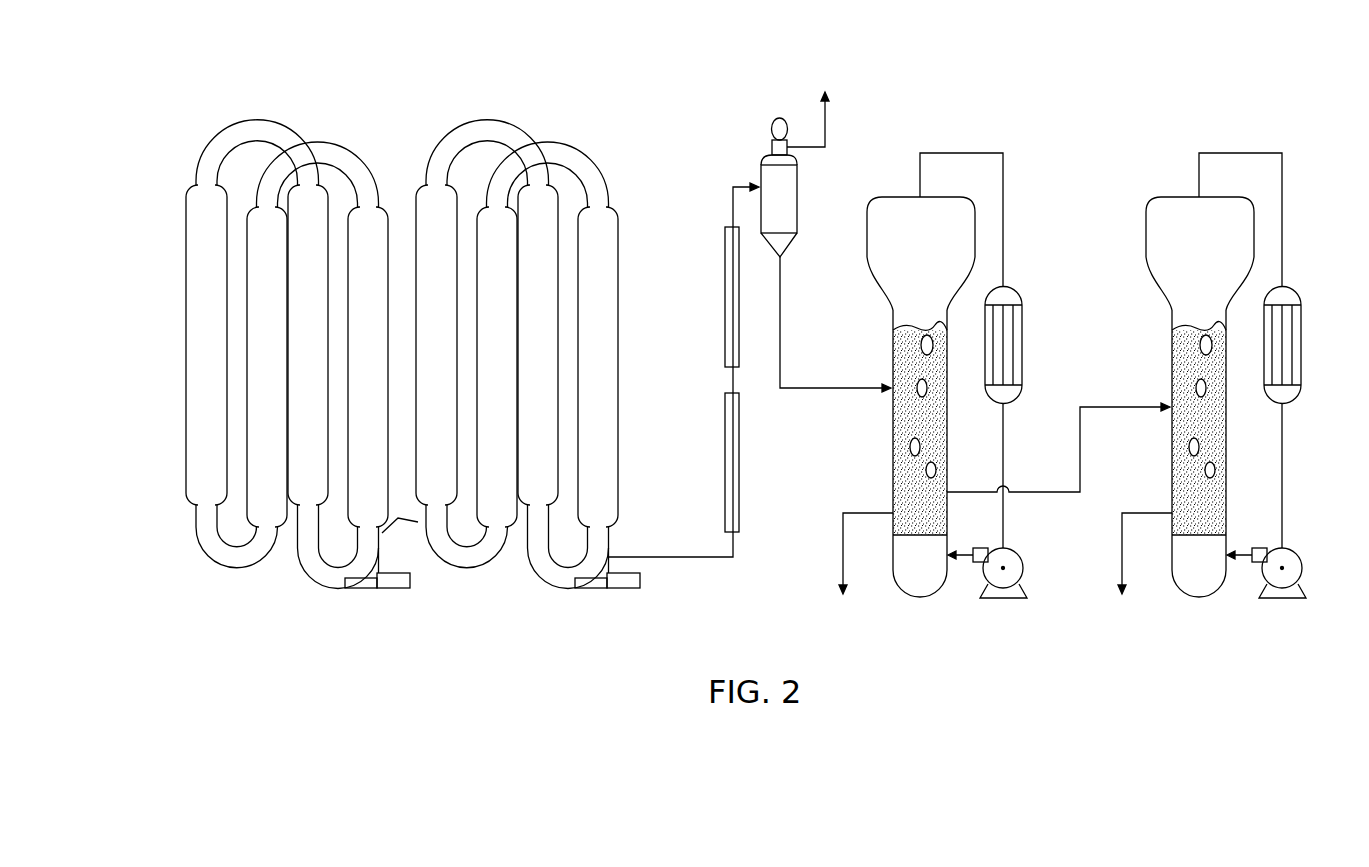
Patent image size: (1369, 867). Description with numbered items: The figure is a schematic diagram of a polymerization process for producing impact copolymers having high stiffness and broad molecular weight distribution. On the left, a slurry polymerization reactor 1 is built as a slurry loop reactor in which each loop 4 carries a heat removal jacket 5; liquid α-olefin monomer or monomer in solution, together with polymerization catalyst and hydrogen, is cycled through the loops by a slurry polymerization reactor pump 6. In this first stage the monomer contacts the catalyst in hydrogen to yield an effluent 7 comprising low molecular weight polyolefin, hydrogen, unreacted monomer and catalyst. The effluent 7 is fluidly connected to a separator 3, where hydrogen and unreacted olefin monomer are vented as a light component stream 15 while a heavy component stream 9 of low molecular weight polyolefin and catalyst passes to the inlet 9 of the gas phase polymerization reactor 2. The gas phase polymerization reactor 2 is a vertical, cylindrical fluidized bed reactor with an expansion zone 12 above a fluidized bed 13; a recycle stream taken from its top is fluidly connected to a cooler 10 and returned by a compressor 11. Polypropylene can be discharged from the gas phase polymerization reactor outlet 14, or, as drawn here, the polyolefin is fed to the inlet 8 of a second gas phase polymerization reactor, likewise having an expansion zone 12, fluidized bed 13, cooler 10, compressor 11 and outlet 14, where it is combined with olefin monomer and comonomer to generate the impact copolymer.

The slurry polymerization reactor 1 is at (375, 349).
The gas phase polymerization reactor 2 is at (1069, 320).
The separator 3 is at (914, 287).
The loop 4 is at (220, 565).
The heat removal jacket 5 is at (186, 236).
The slurry polymerization reactor pump 6 is at (386, 590).
The effluent 7 is at (660, 558).
The inlet of second gas phase polymerization reactor 8 is at (1168, 408).
The heavy component stream / inlet 9 is at (888, 385).
The cooler 10 is at (1022, 315).
The compressor 11 is at (1020, 555).
The expansion zone 12 is at (880, 198).
The fluidized bed 13 is at (890, 490).
The gas phase polymerization reactor outlet 14 is at (843, 540).
The light component stream 15 is at (972, 109).